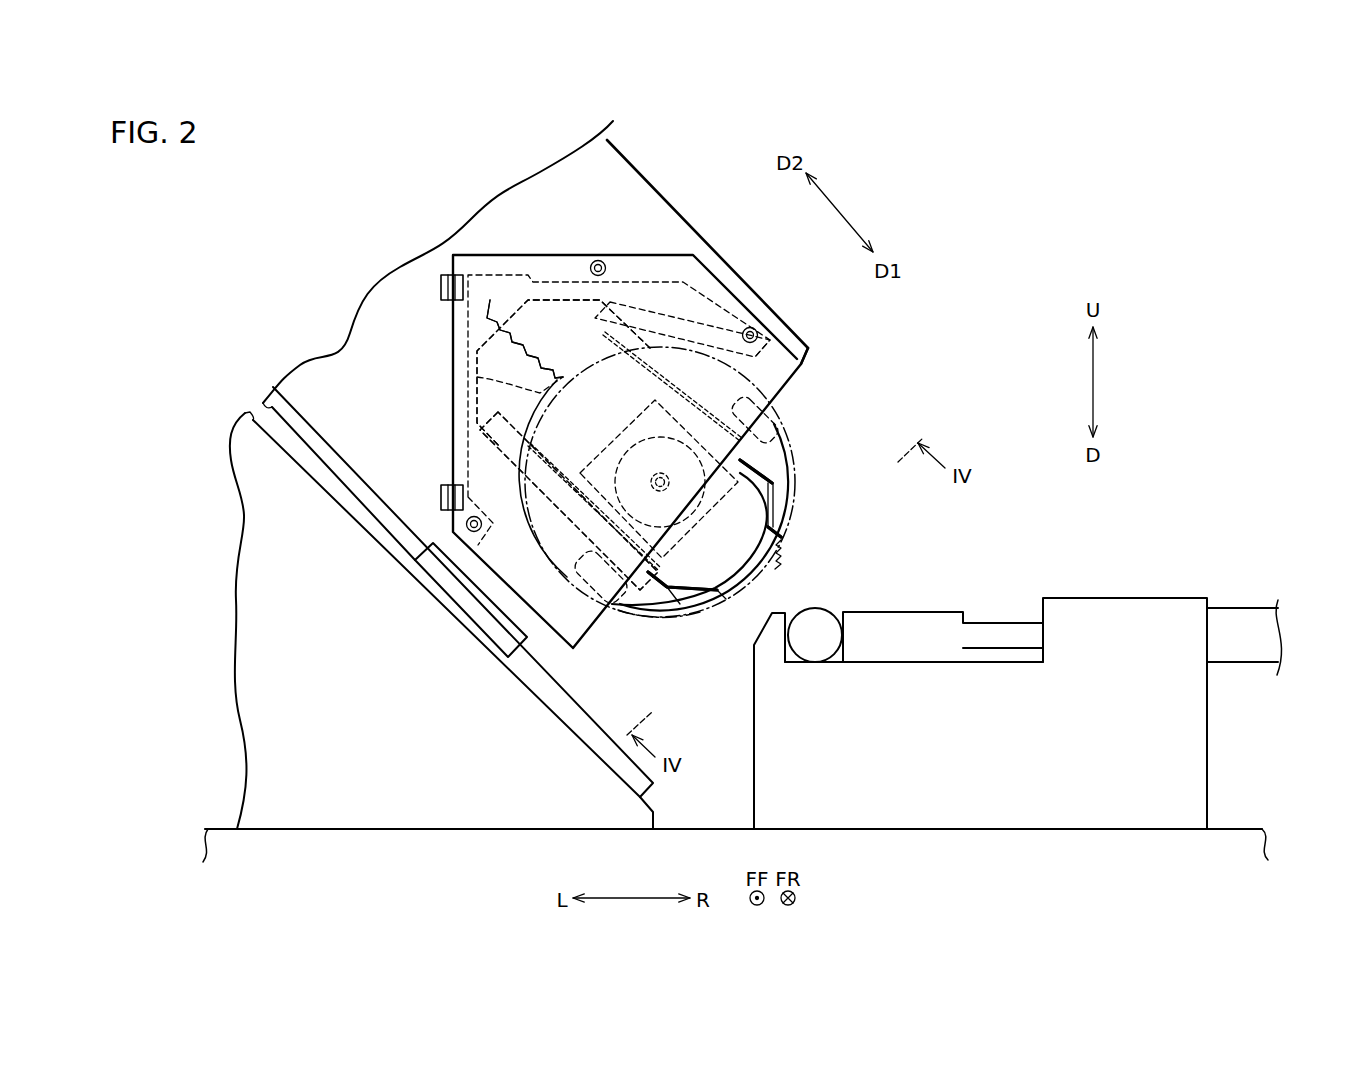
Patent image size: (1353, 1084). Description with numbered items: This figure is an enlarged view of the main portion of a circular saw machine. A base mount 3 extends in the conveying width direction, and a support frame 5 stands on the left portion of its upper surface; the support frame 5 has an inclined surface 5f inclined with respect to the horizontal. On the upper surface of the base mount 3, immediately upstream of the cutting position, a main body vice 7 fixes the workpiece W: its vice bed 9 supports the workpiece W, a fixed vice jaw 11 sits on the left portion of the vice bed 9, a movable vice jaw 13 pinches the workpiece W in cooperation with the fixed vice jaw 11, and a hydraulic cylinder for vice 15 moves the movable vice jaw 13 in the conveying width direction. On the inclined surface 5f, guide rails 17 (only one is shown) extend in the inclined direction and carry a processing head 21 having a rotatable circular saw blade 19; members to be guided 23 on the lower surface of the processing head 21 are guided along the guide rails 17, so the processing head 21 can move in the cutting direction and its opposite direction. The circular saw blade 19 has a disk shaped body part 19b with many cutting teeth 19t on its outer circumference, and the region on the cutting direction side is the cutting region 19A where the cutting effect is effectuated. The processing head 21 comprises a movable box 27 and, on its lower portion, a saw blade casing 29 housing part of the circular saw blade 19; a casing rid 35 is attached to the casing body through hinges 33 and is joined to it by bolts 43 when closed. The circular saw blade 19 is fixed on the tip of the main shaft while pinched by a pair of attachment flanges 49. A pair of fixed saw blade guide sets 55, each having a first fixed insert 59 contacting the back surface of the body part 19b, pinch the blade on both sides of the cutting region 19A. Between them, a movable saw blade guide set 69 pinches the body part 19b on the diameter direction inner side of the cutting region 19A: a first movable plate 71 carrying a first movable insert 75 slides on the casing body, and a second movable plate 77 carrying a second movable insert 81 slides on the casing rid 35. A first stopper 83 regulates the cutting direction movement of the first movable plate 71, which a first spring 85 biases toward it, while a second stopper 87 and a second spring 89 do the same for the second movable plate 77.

The base mount 3 is at (1243, 827).
The support frame 5 is at (318, 820).
The inclined surface 5f is at (540, 688).
The main body vice 7 is at (1107, 597).
The vice bed 9 is at (965, 818).
The fixed vice jaw 11 is at (763, 652).
The movable vice jaw 13 is at (930, 608).
The hydraulic cylinder for vice 15 is at (1240, 608).
The guide rail 17 is at (578, 727).
The circular saw blade 19 is at (788, 434).
The cutting region 19A is at (737, 593).
The body part 19b is at (690, 353).
The cutting teeth 19t is at (733, 612).
The processing head 21 is at (713, 242).
The member to be guided 23 is at (467, 595).
The movable box 27 is at (630, 172).
The saw blade casing 29 is at (672, 252).
The hinge 33 is at (440, 494).
The casing rid 35 is at (533, 268).
The bolt 43 is at (752, 328).
The attachment flange 49 is at (547, 547).
The fixed saw blade guide set 55 is at (789, 470).
The first fixed insert 59 is at (778, 512).
The movable saw blade guide set 69 is at (770, 560).
The first movable plate 71 is at (563, 373).
The first movable insert 75 is at (714, 525).
The second movable plate 77 is at (537, 393).
The second movable insert 81 is at (768, 543).
The first stopper 83 is at (569, 501).
The first spring 85 is at (525, 339).
The second stopper 87 is at (620, 440).
The second spring 89 is at (493, 333).
The workpiece W is at (817, 655).